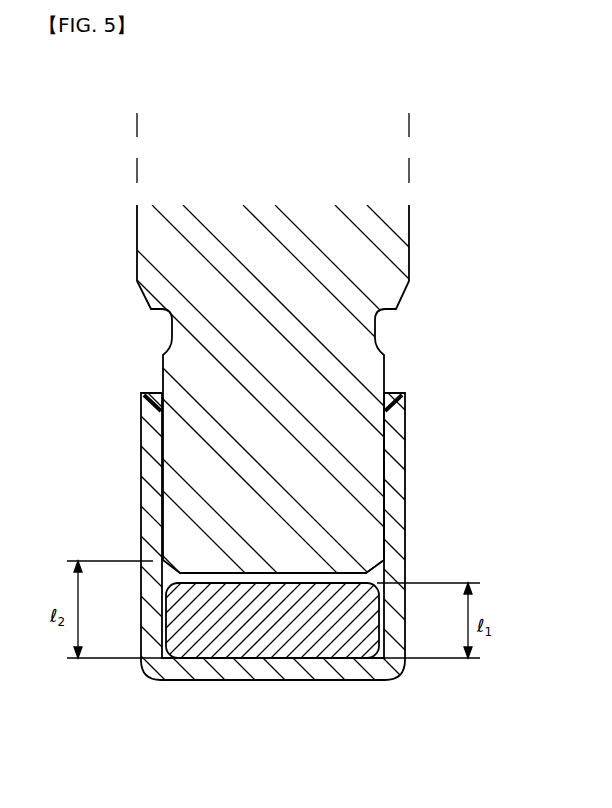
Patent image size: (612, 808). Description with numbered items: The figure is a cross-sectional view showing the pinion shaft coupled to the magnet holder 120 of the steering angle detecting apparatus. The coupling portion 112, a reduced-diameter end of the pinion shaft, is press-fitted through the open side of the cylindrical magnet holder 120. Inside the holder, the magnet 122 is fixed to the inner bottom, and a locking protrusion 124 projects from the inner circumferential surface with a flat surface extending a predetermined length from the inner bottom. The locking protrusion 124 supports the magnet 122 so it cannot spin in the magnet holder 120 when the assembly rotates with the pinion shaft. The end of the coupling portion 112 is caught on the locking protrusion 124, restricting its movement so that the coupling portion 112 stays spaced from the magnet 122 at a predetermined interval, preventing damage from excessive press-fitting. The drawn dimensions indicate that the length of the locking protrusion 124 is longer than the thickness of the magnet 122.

The coupling portion 112 is at (368, 378).
The magnet holder 120 is at (413, 476).
The magnet 122 is at (272, 656).
The locking protrusion 124 is at (383, 567).